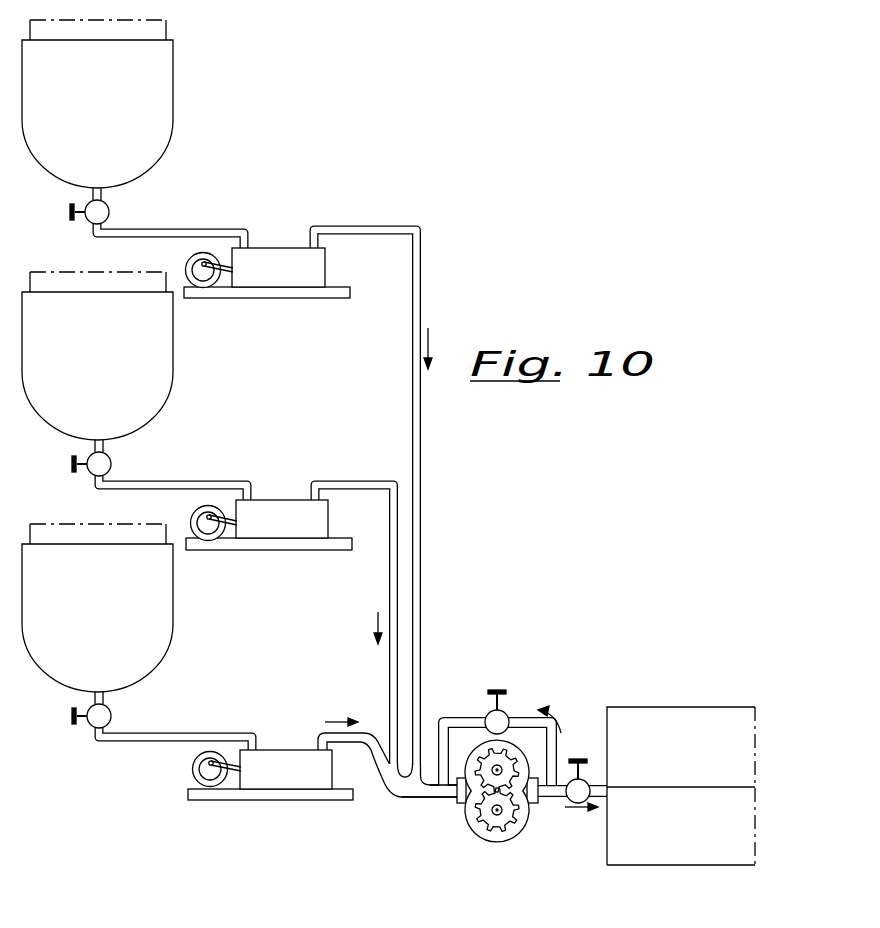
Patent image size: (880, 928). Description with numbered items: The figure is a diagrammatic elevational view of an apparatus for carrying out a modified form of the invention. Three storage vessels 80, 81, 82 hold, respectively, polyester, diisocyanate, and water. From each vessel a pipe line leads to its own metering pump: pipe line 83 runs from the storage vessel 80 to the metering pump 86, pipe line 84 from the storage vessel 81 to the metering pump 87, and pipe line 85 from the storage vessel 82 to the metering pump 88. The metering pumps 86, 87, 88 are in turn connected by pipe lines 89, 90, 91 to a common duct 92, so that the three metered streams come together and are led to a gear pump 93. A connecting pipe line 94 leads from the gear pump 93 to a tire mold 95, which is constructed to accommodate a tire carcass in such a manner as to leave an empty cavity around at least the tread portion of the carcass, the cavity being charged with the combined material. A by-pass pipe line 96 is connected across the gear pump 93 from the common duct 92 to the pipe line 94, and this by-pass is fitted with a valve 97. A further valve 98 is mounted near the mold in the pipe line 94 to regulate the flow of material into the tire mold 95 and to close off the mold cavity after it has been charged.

The storage vessel 80 is at (165, 100).
The storage vessel 81 is at (166, 355).
The storage vessel 82 is at (168, 606).
The pipe line 83 is at (166, 222).
The pipe line 84 is at (172, 476).
The pipe line 85 is at (180, 722).
The metering pump 86 is at (276, 247).
The metering pump 87 is at (280, 499).
The metering pump 88 is at (278, 749).
The pipe line 89 is at (422, 266).
The pipe line 90 is at (389, 583).
The pipe line 91 is at (378, 750).
The common duct 92 is at (416, 799).
The gear pump 93 is at (490, 840).
The connecting pipe line 94 is at (560, 798).
The tire mold 95 is at (674, 872).
The by-pass pipe line 96 is at (463, 702).
The valve 97 is at (500, 690).
The valve 98 is at (600, 750).